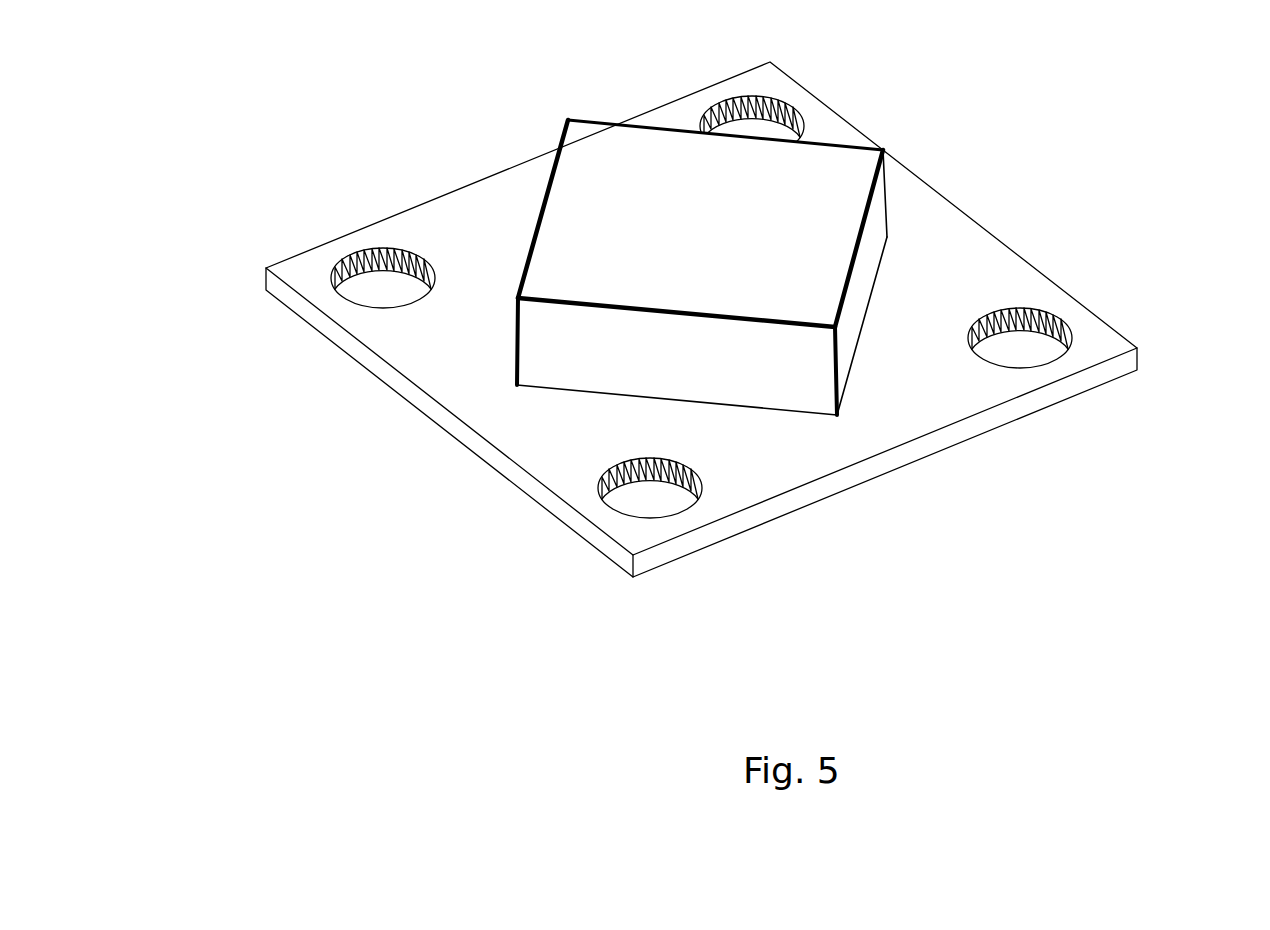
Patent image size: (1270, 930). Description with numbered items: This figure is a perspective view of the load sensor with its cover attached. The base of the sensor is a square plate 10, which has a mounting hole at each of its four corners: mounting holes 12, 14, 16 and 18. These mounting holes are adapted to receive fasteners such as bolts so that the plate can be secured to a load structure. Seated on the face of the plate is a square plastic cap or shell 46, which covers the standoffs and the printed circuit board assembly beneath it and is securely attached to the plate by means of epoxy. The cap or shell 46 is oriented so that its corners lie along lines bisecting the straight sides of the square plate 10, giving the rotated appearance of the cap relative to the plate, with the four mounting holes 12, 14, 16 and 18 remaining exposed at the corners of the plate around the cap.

The square plate 10 is at (701, 319).
The mounting hole 12 is at (683, 97).
The mounting hole 14 is at (311, 252).
The mounting hole 16 is at (723, 529).
The mounting hole 18 is at (1091, 376).
The square plastic cap or shell 46 is at (777, 267).